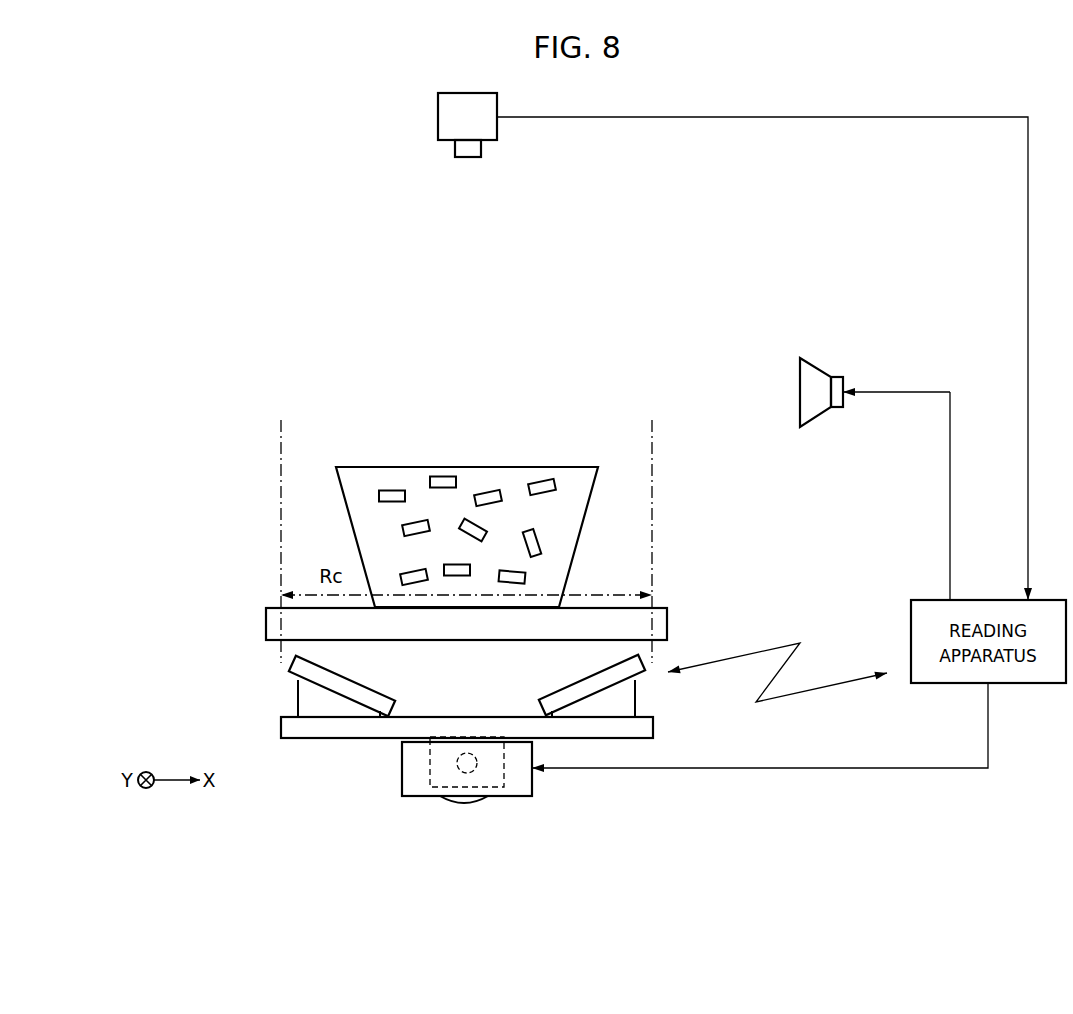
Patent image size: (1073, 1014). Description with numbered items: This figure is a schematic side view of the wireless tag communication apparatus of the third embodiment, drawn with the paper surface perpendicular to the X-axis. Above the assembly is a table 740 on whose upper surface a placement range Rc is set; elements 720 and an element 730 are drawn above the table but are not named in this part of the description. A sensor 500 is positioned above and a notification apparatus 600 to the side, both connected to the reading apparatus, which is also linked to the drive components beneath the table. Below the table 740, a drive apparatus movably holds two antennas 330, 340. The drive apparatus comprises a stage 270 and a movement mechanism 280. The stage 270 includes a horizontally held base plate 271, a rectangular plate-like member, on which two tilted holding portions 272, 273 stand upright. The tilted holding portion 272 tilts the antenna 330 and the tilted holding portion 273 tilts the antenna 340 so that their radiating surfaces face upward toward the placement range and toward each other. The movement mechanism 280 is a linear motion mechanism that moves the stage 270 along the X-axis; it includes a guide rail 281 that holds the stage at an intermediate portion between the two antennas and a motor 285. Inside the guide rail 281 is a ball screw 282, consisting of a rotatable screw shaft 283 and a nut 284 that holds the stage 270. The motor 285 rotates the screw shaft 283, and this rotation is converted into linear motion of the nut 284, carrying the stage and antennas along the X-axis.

The sensor 500 is at (438, 116).
The notification apparatus 600 is at (817, 366).
The pieces 720 is at (437, 475).
The container 730 is at (580, 536).
The table 740 is at (667, 614).
The stage 270 is at (216, 717).
The base plate 271 is at (305, 734).
The tilted holding portion 272 is at (298, 690).
The tilted holding portion 273 is at (630, 698).
The antenna 330 is at (373, 693).
The antenna 340 is at (557, 693).
The movement mechanism 280 is at (316, 805).
The guide rail 281 is at (402, 757).
The ball screw 282 is at (495, 821).
The screw shaft 283 is at (467, 773).
The nut 284 is at (503, 777).
The motor 285 is at (457, 806).